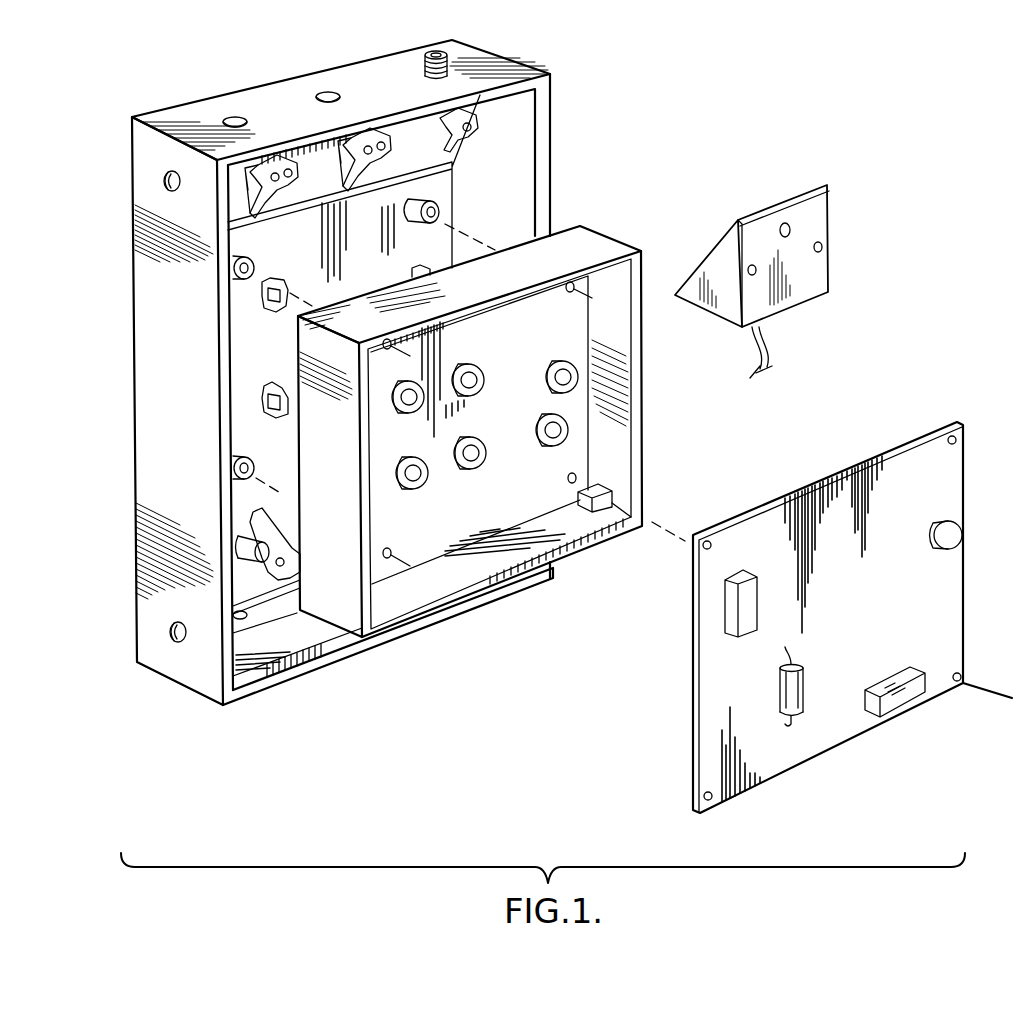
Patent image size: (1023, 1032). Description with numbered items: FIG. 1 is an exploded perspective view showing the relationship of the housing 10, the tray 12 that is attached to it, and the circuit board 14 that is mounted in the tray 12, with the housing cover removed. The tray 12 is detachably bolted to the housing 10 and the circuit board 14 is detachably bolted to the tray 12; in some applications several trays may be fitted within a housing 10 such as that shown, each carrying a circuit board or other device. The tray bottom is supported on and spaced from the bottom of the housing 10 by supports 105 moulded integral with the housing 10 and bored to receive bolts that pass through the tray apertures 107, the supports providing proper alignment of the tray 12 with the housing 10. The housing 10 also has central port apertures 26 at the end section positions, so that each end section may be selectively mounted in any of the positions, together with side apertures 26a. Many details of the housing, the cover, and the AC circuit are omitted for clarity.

The housing 10 is at (342, 372).
The tray 12 is at (587, 555).
The circuit board 14 is at (908, 720).
The central port apertures 26 is at (323, 93).
The side mounting hole 26a is at (163, 178).
The supports 105 is at (438, 212).
The tray apertures 107 is at (567, 290).